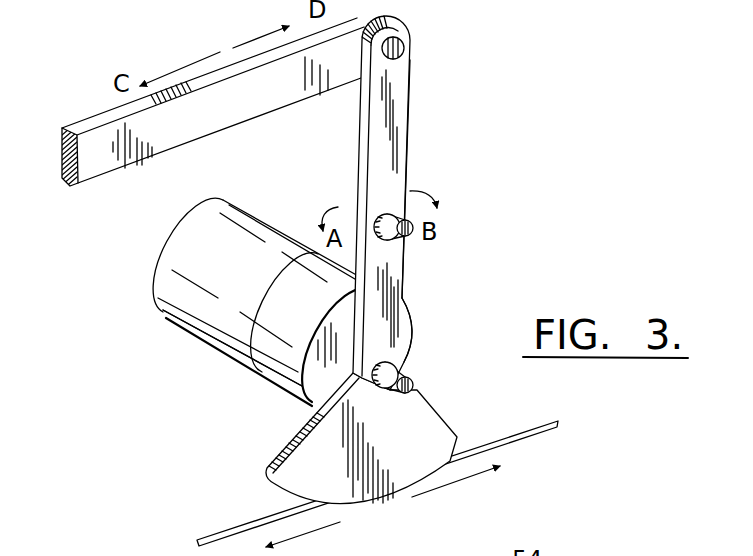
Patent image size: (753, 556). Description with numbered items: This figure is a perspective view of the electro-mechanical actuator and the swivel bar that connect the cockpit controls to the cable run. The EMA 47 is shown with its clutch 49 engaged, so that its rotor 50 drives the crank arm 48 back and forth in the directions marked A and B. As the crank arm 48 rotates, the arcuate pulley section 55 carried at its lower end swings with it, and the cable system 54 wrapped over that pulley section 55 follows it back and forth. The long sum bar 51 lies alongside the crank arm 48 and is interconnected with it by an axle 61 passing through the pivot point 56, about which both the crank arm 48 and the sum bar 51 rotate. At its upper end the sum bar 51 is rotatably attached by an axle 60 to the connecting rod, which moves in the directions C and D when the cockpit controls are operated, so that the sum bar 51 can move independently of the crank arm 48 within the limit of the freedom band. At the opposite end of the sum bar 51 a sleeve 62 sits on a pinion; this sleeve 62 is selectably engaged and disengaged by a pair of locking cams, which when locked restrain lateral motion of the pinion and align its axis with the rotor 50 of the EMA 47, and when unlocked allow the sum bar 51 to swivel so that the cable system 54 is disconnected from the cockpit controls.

The EMA 47 is at (151, 282).
The crank arm 48 is at (343, 280).
The clutch 49 is at (285, 372).
The rotor 50 is at (412, 380).
The sum bar 51 is at (412, 84).
The cable system 54 is at (532, 440).
The pulley section 55 is at (450, 428).
The pivot point 56 is at (411, 194).
The axle 60 is at (400, 44).
The axle 61 is at (401, 238).
The sleeve 62 is at (401, 361).